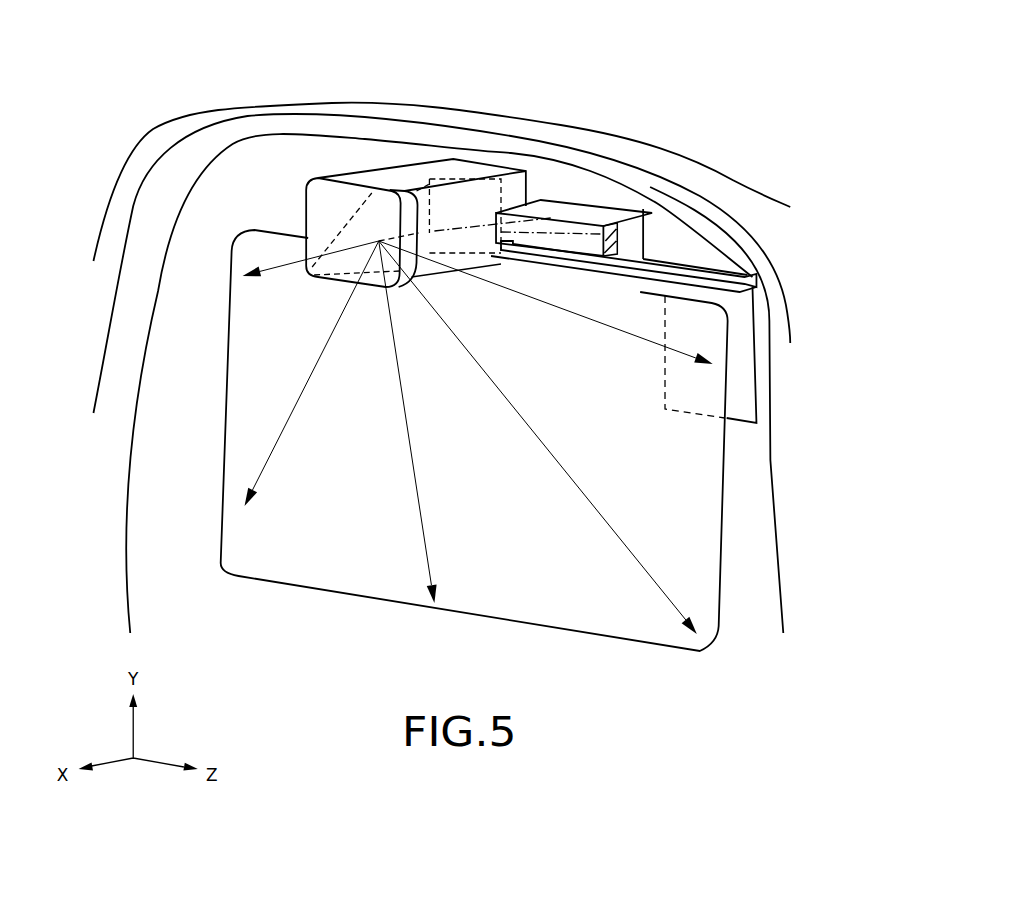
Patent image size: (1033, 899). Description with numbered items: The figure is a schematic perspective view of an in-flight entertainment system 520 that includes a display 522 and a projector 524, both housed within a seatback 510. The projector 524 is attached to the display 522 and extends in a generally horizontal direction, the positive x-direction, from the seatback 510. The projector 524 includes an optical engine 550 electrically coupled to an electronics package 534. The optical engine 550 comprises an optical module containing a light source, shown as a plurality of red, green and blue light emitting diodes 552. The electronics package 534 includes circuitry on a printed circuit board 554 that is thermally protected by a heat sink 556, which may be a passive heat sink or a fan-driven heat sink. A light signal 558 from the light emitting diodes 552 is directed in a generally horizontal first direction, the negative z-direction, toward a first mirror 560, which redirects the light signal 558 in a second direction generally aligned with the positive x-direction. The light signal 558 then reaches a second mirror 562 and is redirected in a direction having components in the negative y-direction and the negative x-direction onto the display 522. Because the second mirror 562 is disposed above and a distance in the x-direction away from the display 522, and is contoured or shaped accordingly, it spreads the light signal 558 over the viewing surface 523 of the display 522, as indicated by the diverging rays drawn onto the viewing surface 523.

The seatback 510 is at (137, 147).
The in-flight entertainment system 520 is at (528, 84).
The display 522 is at (602, 620).
The viewing surface 523 is at (288, 557).
The projector 524 is at (335, 177).
The electronics package 534 is at (743, 310).
The optical engine 550 is at (578, 212).
The red, green and blue light emitting diodes 552 is at (650, 210).
The printed circuit board 554 is at (740, 355).
The heat sink 556 is at (700, 252).
The light signal 558 is at (523, 222).
The first mirror 560 is at (447, 176).
The second mirror 562 is at (350, 222).